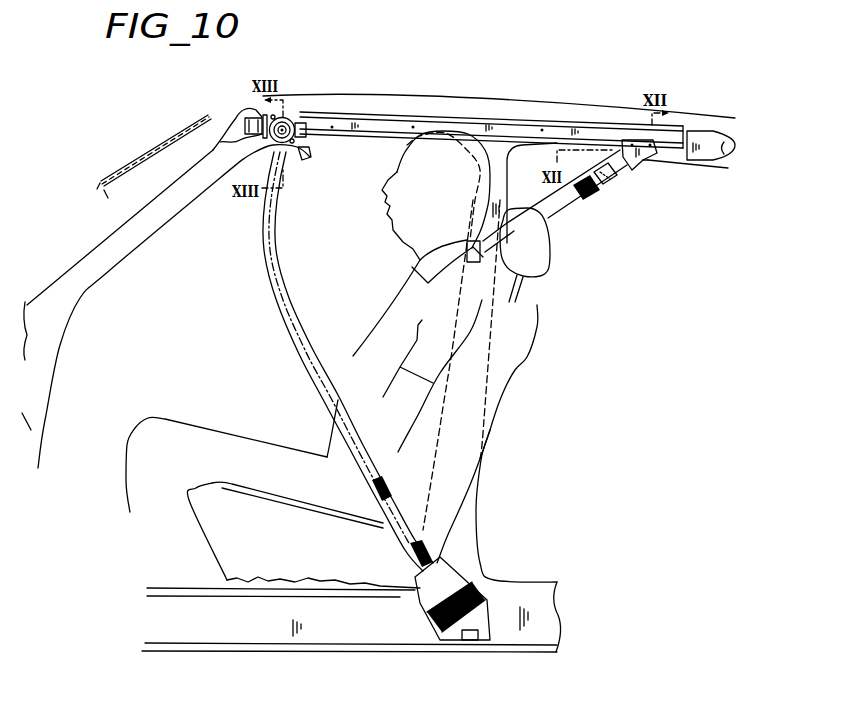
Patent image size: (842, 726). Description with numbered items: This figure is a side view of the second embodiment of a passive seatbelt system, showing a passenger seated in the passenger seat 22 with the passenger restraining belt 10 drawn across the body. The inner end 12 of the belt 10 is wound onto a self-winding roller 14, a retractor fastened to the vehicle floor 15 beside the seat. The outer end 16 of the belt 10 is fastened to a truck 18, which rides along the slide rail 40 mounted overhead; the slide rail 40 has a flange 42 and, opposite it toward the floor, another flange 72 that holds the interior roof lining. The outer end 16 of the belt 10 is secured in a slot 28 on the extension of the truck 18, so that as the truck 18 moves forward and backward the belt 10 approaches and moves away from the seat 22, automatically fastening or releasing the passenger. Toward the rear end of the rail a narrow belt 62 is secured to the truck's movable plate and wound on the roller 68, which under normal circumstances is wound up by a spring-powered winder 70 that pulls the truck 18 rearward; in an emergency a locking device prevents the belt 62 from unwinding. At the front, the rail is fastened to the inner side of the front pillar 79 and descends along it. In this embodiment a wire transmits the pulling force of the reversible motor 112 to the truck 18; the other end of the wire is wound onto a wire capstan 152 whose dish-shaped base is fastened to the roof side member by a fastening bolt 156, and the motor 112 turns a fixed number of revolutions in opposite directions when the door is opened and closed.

The passenger restraining belt 10 is at (297, 298).
The inner end of the belt 12 is at (437, 585).
The self-winding roller 14 is at (492, 583).
The vehicle floor 15 is at (363, 643).
The outer end of the belt 16 is at (607, 187).
The truck 18 is at (326, 153).
The passenger seat 22 is at (413, 433).
The slot 28 is at (624, 165).
The slide rail 40 is at (585, 132).
The flange 42 is at (511, 114).
The narrow belt 62 is at (677, 143).
The roller 68 is at (457, 637).
The spring-powered winder 70 is at (432, 625).
The flange 72 is at (555, 132).
The front pillar 79 is at (110, 270).
The reversible motor 112 is at (252, 135).
The wire capstan 152 is at (262, 110).
The fastening bolt 156 is at (287, 114).